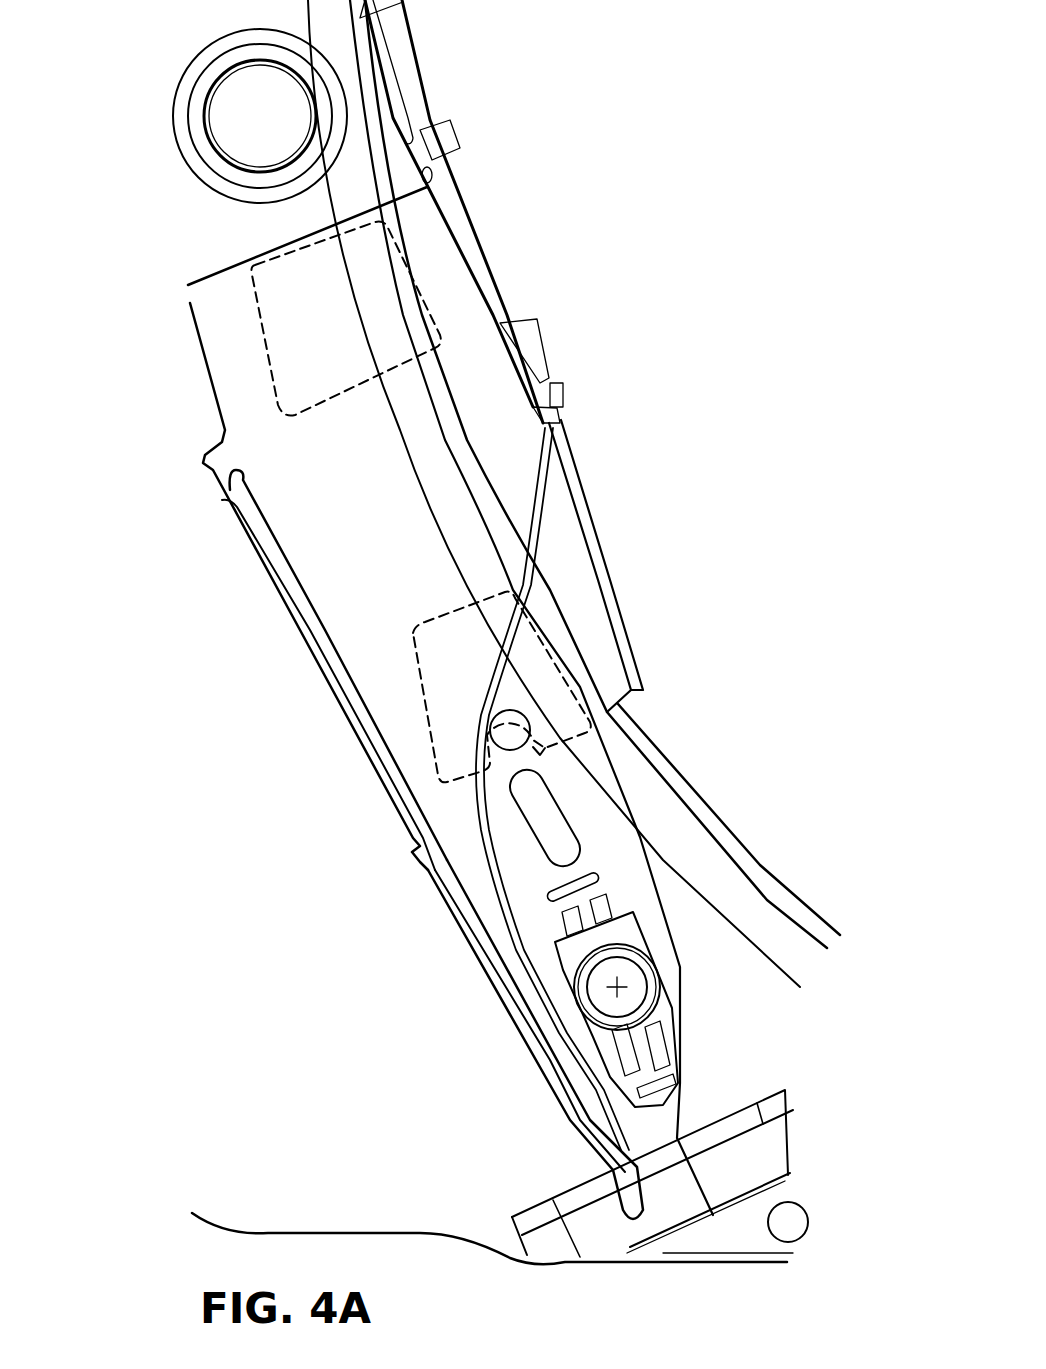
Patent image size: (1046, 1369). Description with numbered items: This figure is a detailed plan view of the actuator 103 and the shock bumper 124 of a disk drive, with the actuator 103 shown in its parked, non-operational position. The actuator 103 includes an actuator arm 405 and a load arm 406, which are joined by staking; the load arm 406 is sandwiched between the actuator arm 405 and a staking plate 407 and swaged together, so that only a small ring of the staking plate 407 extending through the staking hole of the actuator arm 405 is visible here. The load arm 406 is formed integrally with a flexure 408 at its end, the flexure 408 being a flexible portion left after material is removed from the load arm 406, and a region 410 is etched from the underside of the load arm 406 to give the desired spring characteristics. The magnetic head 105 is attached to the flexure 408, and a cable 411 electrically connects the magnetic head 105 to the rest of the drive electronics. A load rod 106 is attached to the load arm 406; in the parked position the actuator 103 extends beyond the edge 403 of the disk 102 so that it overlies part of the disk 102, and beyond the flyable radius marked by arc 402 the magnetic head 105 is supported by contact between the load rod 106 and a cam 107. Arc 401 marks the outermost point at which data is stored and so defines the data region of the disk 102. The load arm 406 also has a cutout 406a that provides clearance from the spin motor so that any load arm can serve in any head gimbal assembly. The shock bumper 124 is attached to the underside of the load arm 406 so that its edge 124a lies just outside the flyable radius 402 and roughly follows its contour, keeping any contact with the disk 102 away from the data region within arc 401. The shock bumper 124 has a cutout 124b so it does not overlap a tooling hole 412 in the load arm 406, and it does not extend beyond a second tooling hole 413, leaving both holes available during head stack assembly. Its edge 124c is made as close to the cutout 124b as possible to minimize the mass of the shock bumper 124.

The disk 102 is at (667, 243).
The actuator 103 is at (580, 182).
The magnetic head 105 is at (643, 945).
The load rod 106 is at (560, 1098).
The cam 107 is at (757, 1153).
The shock bumper 124 is at (527, 657).
The edge 124a is at (585, 652).
The cutout 124b is at (538, 750).
The edge 124c is at (413, 637).
The arc 401 is at (745, 850).
The arc 402 is at (797, 897).
The edge 403 is at (675, 870).
The actuator arm 405 is at (427, 187).
The load arm 406 is at (190, 322).
The cutout 406a is at (613, 703).
The staking plate 407 is at (203, 118).
The flexure 408 is at (640, 1030).
The region 410 is at (257, 353).
The cable 411 is at (552, 470).
The tooling hole 412 is at (487, 722).
The tooling hole 413 is at (535, 842).